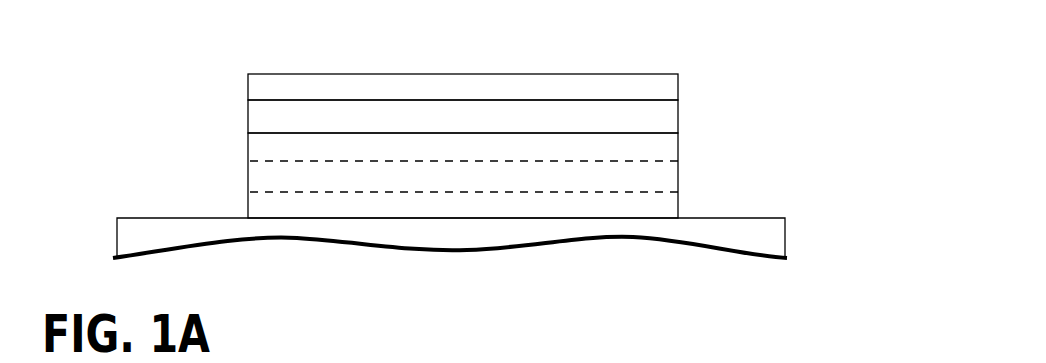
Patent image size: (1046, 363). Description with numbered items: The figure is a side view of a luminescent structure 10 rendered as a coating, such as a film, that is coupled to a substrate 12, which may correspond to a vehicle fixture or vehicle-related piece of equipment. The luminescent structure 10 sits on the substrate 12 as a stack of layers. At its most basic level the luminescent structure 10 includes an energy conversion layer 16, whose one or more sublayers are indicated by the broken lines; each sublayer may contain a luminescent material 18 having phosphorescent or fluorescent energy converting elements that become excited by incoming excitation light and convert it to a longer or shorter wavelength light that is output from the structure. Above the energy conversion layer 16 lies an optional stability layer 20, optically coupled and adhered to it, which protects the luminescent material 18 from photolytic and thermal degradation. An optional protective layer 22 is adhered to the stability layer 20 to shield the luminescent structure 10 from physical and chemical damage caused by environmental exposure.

The luminescent structure 10 is at (612, 47).
The substrate 12 is at (725, 218).
The energy conversion layer 16 is at (248, 175).
The luminescent material 18 is at (630, 177).
The stability layer 20 is at (248, 117).
The protective layer 22 is at (343, 73).